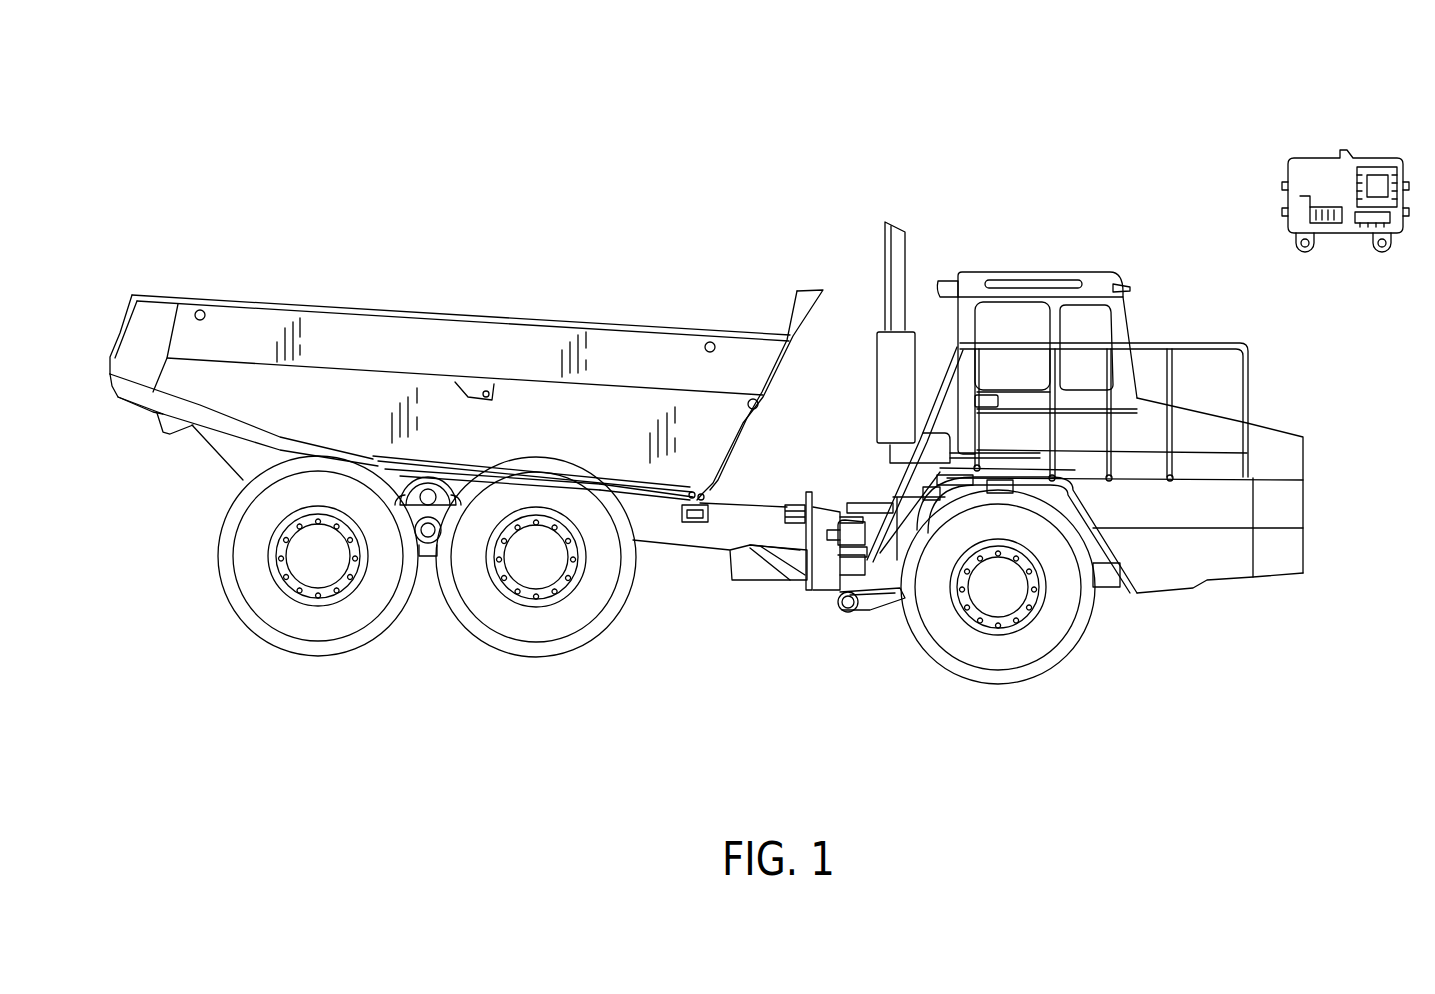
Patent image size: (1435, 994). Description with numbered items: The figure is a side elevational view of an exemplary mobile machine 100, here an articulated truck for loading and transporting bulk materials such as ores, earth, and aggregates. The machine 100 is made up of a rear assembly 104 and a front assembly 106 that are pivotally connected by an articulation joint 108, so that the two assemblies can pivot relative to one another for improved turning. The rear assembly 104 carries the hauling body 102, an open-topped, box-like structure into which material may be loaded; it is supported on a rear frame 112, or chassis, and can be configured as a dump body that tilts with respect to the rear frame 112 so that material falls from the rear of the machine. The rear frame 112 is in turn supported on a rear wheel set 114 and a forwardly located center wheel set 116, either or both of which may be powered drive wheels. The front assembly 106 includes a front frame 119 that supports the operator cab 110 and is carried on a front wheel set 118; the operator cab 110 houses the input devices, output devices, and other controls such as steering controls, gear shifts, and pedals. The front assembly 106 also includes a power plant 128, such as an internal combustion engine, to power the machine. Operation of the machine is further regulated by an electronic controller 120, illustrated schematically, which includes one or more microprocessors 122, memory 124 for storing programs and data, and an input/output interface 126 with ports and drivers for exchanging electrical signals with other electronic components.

The mobile machine 100 is at (988, 167).
The hauling body 102 is at (653, 327).
The rear assembly 104 is at (373, 275).
The front assembly 106 is at (1143, 292).
The articulation joint 108 is at (782, 623).
The operator cab 110 is at (1095, 272).
The rear frame 112 is at (683, 547).
The rear wheel set 114 is at (322, 628).
The center wheel set 116 is at (537, 643).
The front wheel set 118 is at (1002, 657).
The front frame 119 is at (1200, 587).
The electronic controller 120 is at (1327, 177).
The microprocessor 122 is at (1377, 188).
The memory 124 is at (1367, 217).
The input/output interface 126 is at (1315, 207).
The power plant 128 is at (1275, 430).